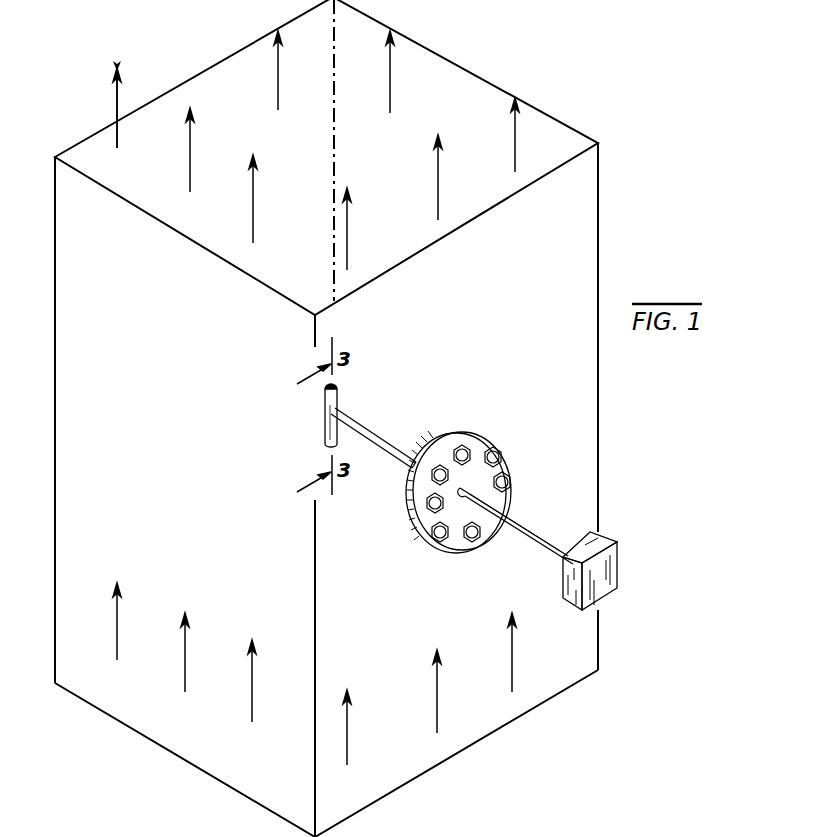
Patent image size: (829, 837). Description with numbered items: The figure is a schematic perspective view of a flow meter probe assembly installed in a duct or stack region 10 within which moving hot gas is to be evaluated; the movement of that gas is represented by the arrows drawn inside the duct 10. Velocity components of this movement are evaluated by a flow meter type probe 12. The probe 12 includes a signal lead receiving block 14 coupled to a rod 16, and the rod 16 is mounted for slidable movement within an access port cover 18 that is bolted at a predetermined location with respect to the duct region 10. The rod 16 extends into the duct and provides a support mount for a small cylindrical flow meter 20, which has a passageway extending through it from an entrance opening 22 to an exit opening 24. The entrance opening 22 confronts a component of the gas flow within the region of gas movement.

The duct or stack region 10 is at (633, 222).
The flow meter type probe 12 is at (628, 567).
The signal lead receiving block 14 is at (607, 540).
The rod 16 is at (518, 520).
The access port cover 18 is at (483, 448).
The small cylindrical flow meter 20 is at (337, 409).
The entrance opening 22 is at (325, 447).
The exit opening 24 is at (338, 385).